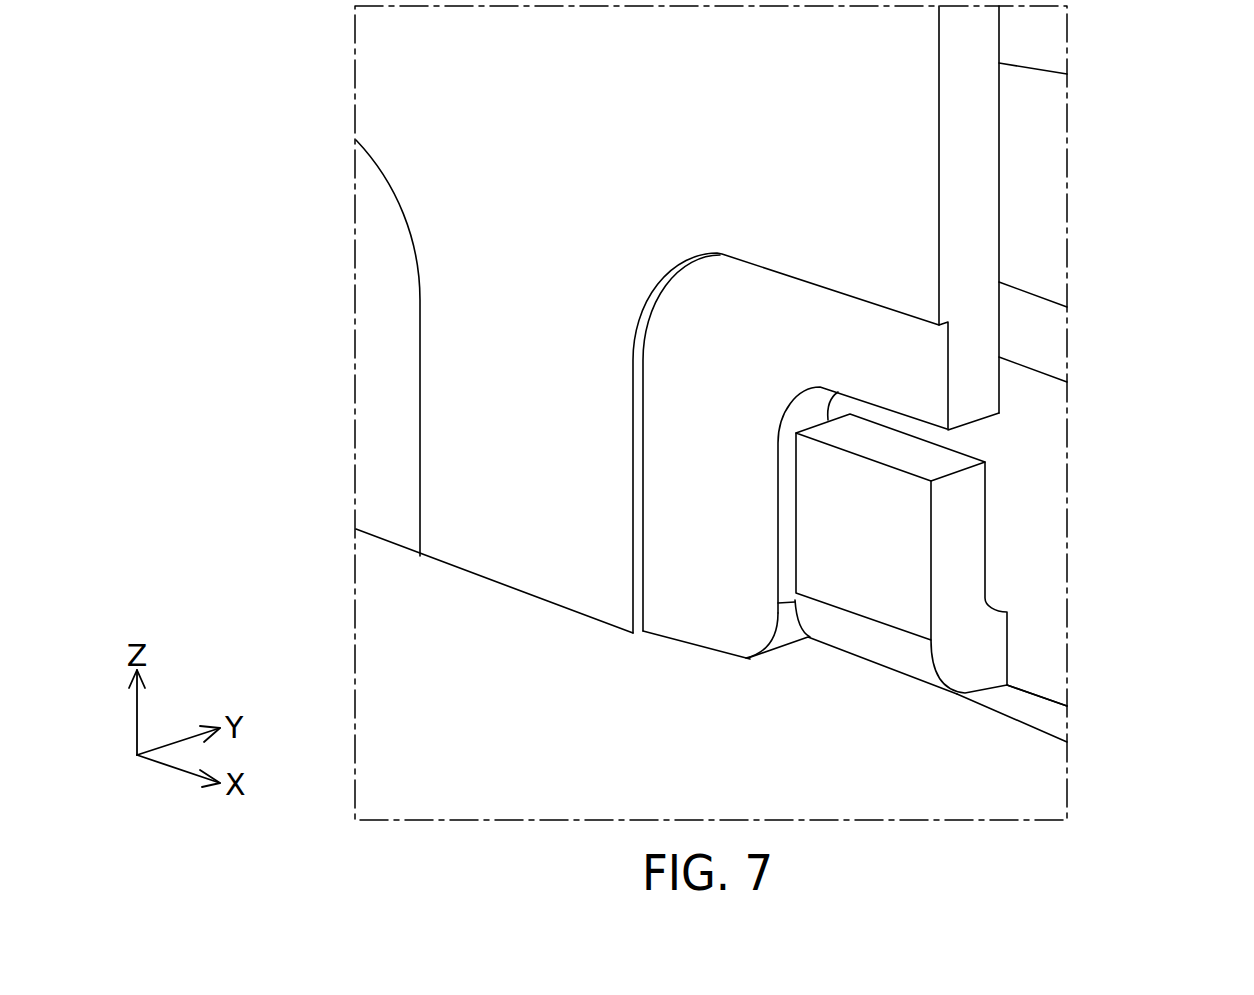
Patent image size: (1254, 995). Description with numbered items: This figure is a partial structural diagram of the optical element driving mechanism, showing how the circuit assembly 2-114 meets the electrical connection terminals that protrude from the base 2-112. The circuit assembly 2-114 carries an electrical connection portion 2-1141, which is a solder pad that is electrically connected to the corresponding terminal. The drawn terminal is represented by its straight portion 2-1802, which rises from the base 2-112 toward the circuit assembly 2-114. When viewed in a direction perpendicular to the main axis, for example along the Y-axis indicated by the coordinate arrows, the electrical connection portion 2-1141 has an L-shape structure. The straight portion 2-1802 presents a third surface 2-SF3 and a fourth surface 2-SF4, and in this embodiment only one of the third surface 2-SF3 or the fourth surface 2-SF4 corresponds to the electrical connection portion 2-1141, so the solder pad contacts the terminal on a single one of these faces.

The circuit assembly 2-114 is at (385, 83).
The electrical connection portion 2-1141 is at (693, 425).
The straight portion 2-1802 is at (795, 512).
The third surface 2-SF3 is at (795, 557).
The fourth surface 2-SF4 is at (963, 608).
The base 2-112 is at (1045, 632).